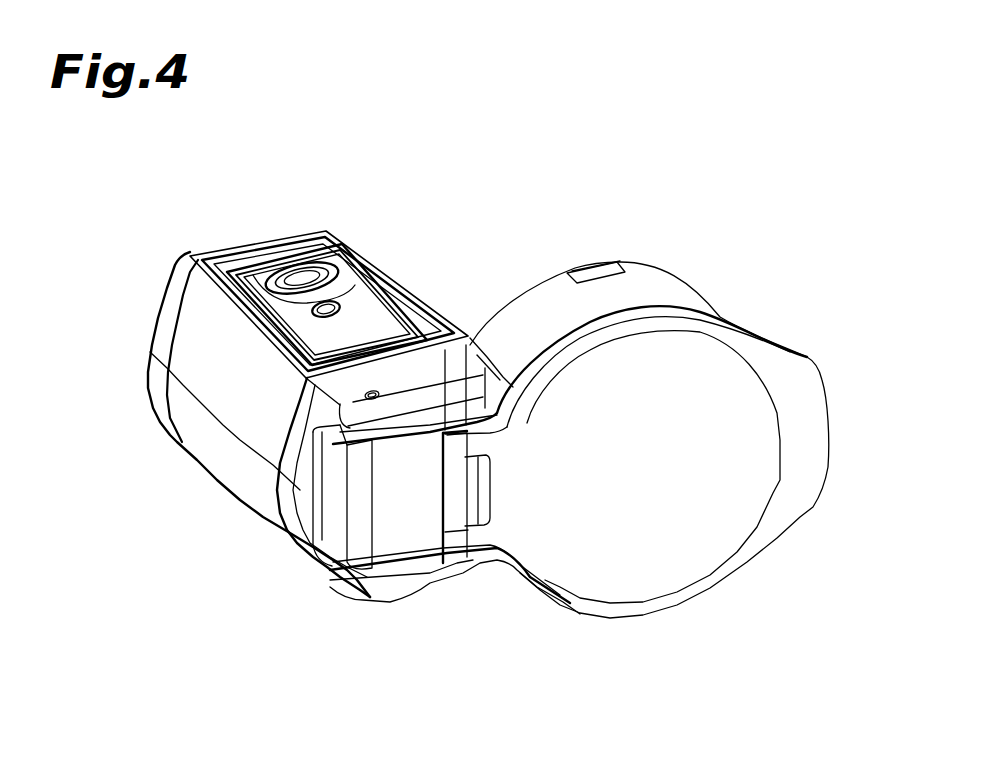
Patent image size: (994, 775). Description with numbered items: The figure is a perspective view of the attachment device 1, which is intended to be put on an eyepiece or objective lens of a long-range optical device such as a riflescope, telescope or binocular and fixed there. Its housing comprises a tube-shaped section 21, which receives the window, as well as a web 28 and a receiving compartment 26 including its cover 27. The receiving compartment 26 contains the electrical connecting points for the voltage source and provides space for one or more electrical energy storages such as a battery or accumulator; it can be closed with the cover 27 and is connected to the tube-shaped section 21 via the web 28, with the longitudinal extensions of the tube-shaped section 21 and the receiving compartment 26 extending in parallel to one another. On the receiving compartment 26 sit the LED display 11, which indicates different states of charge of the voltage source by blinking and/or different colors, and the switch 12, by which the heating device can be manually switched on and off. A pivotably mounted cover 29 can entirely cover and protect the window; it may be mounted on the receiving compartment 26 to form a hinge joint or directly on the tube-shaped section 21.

The attachment device 1 is at (796, 219).
The LED display 11 is at (303, 266).
The switch 12 is at (350, 292).
The tube-shaped section 21 is at (643, 263).
The receiving compartment 26 is at (233, 365).
The cover 27 is at (173, 306).
The web 28 is at (490, 376).
The cover 29 is at (705, 465).